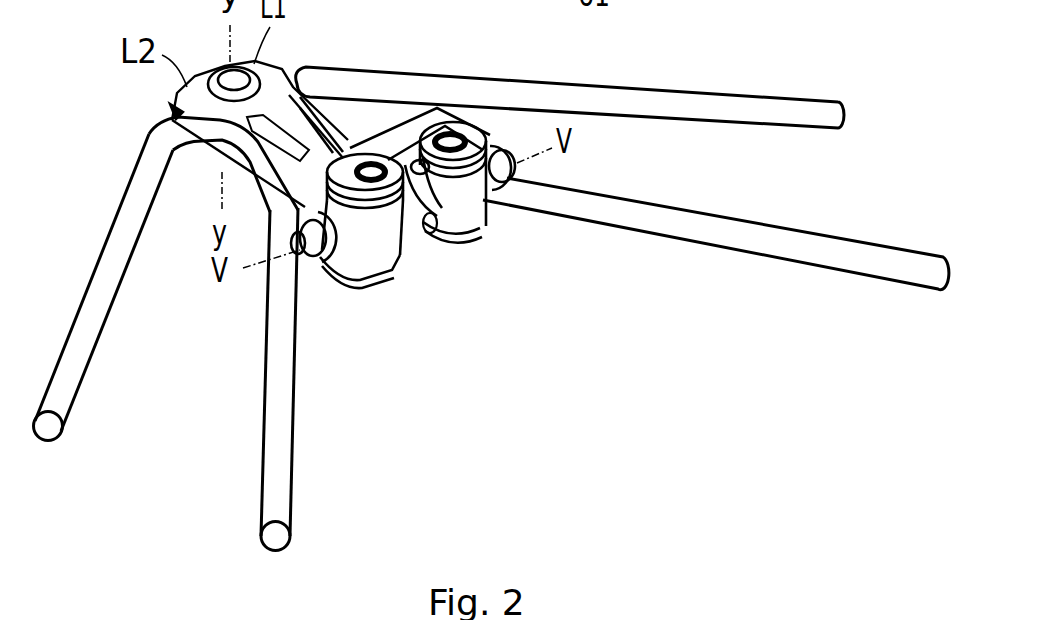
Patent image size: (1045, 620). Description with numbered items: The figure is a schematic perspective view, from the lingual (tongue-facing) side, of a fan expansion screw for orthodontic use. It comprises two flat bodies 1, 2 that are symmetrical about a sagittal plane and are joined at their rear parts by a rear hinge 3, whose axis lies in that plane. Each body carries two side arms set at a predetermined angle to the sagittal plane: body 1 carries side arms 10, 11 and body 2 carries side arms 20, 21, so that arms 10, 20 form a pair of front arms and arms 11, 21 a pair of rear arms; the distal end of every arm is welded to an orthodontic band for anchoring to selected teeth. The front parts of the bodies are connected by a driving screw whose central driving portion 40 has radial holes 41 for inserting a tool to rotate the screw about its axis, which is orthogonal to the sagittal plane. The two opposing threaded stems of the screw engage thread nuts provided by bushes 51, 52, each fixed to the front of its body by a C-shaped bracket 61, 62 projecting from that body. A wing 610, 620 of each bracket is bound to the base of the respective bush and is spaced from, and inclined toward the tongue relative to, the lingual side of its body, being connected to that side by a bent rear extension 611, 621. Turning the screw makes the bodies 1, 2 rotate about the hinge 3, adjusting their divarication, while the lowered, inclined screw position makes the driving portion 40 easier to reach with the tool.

The flat body 1 is at (280, 59).
The flat body 2 is at (156, 107).
The rear hinge 3 is at (223, 70).
The side arm 10 is at (842, 258).
The side arm 11 is at (785, 118).
The side arm 20 is at (285, 506).
The side arm 21 is at (67, 387).
The central driving portion 40 is at (404, 246).
The radial holes 41 is at (482, 287).
The bush 51 is at (462, 200).
The bush 52 is at (378, 240).
The C-shaped bracket 61 is at (484, 258).
The C-shaped bracket 62 is at (328, 302).
The wing 610 is at (478, 150).
The bent rear extension 611 is at (420, 83).
The wing 620 is at (378, 153).
The bent rear extension 621 is at (333, 137).